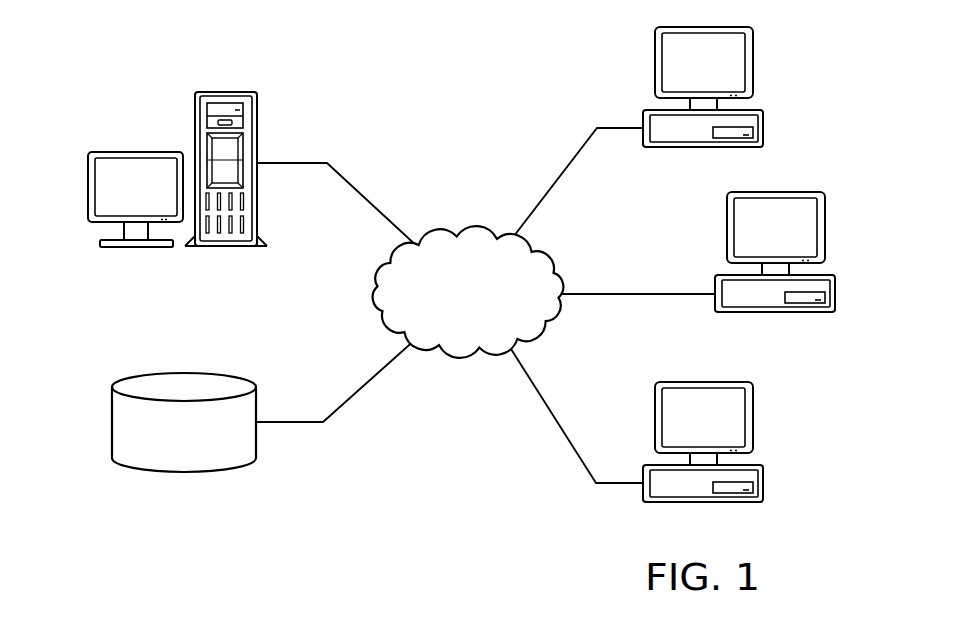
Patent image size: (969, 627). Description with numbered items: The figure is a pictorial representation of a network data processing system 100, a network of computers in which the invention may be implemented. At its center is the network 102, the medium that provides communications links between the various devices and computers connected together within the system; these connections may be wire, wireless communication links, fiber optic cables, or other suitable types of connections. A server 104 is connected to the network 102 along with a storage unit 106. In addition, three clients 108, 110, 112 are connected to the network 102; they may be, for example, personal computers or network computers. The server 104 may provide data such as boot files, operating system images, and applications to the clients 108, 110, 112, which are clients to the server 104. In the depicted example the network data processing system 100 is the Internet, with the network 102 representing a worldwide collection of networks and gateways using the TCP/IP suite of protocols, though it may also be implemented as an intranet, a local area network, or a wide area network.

The network data processing system 100 is at (329, 70).
The network 102 is at (457, 236).
The server 104 is at (88, 187).
The storage unit 106 is at (112, 420).
The client 108 is at (768, 120).
The client 110 is at (837, 283).
The client 112 is at (763, 492).